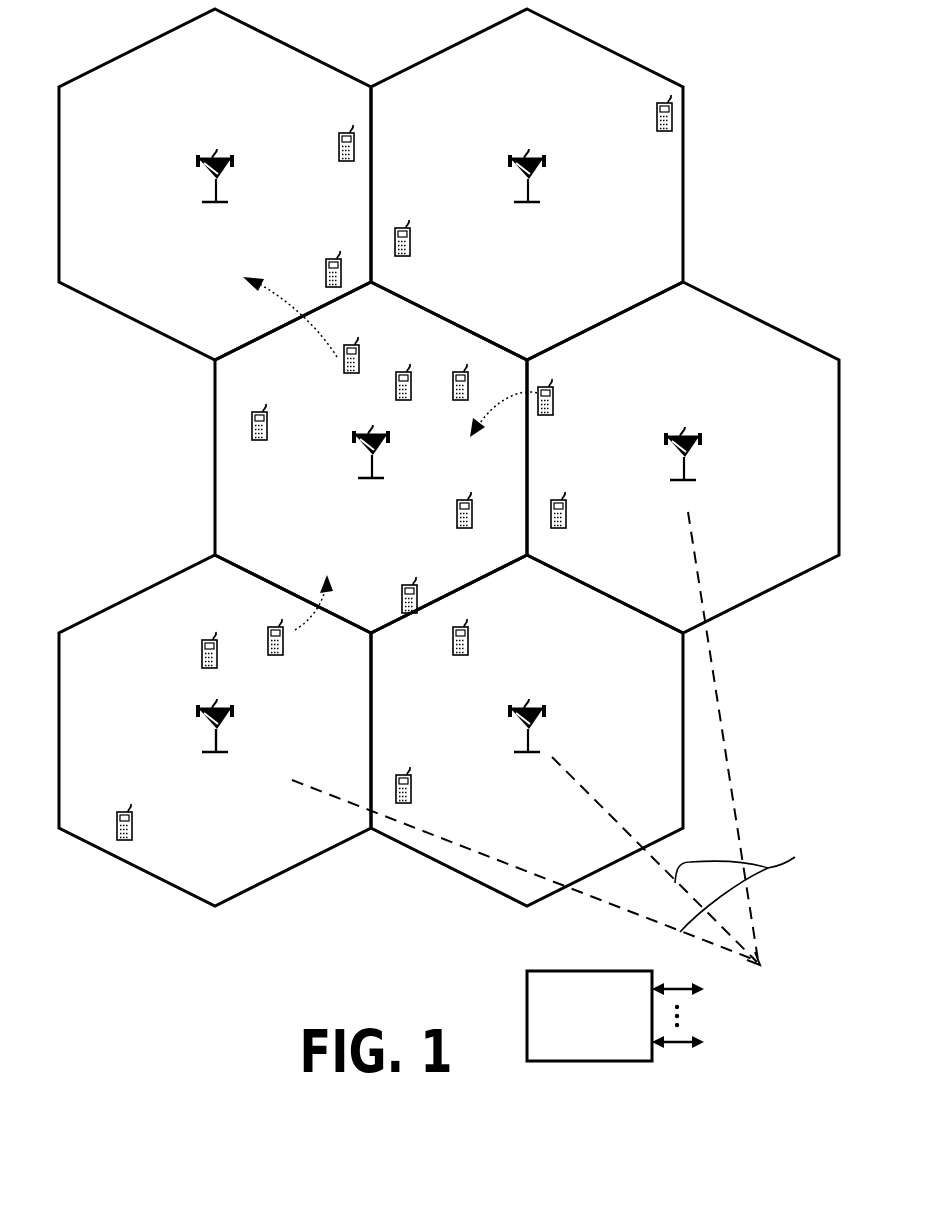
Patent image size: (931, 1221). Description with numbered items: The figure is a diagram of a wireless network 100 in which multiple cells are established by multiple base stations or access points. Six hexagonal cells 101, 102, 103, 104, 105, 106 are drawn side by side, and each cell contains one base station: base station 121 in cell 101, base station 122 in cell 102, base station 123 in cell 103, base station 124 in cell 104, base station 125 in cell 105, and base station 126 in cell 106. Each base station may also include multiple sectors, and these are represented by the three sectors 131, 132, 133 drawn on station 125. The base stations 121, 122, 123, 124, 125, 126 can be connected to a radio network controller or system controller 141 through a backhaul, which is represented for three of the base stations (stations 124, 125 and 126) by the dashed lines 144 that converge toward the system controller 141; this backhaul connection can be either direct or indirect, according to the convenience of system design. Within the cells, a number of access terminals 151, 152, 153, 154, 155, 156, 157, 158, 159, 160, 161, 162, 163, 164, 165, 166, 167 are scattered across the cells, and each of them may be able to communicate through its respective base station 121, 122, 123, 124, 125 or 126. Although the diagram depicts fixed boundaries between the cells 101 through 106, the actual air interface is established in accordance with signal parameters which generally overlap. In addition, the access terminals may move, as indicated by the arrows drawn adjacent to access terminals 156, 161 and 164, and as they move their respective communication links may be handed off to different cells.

The network 100 is at (150, 946).
The cell 101 is at (156, 71).
The cell 102 is at (479, 71).
The cell 103 is at (261, 518).
The cell 104 is at (719, 518).
The cell 105 is at (317, 678).
The cell 106 is at (629, 679).
The base station 121 is at (220, 166).
The base station 122 is at (532, 166).
The base station 123 is at (371, 440).
The base station 124 is at (687, 442).
The base station 125 is at (216, 714).
The base station 126 is at (532, 715).
The sector 131 is at (199, 709).
The sector 132 is at (234, 712).
The sector 133 is at (220, 728).
The system controller 141 is at (585, 970).
The dashed lines 144 is at (559, 738).
The access terminal 151 is at (346, 132).
The access terminal 152 is at (323, 257).
The access terminal 153 is at (657, 118).
The access terminal 154 is at (413, 228).
The access terminal 155 is at (261, 410).
The access terminal 156 is at (363, 343).
The access terminal 157 is at (414, 370).
The access terminal 158 is at (459, 370).
The access terminal 159 is at (476, 498).
The access terminal 160 is at (400, 583).
The access terminal 161 is at (555, 385).
The access terminal 162 is at (566, 499).
The access terminal 163 is at (221, 639).
The access terminal 164 is at (267, 625).
The access terminal 165 is at (135, 810).
The access terminal 166 is at (472, 626).
The access terminal 167 is at (415, 774).